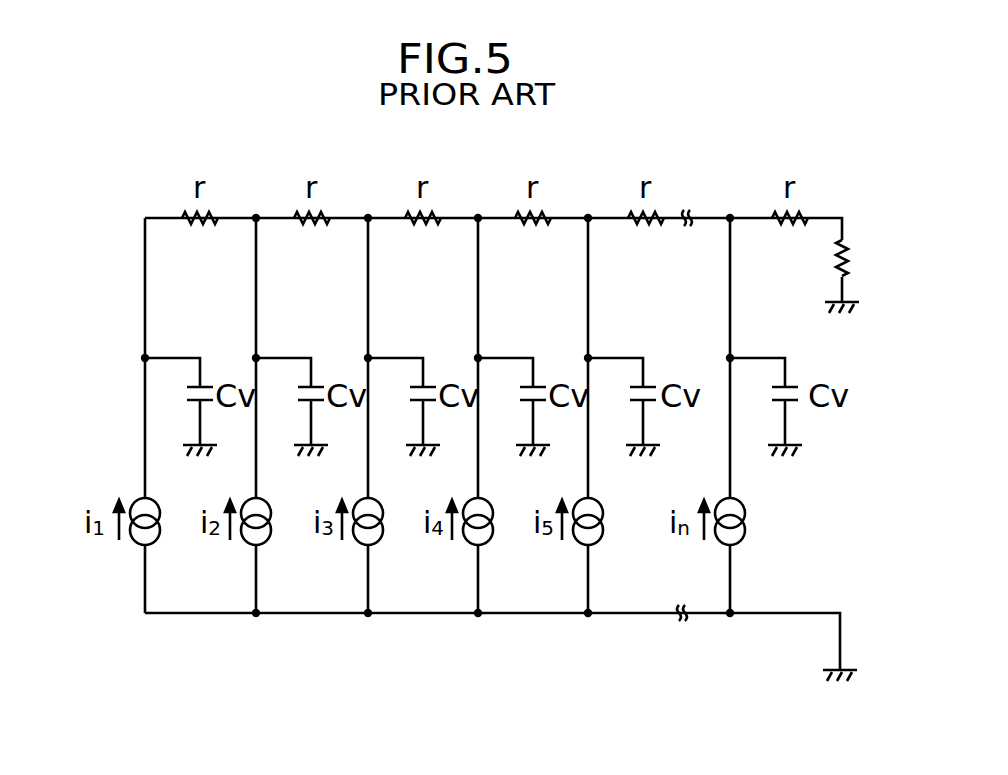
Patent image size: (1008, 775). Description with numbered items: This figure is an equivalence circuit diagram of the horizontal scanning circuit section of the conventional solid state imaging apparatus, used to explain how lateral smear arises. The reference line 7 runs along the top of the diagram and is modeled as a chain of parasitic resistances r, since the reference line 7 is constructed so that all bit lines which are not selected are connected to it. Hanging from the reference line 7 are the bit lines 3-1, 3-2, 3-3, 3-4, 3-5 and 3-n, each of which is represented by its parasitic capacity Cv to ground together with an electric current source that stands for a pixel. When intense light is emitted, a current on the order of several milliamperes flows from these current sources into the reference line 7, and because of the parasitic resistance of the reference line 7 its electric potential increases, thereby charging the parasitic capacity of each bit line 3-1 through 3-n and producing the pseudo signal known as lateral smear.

The first delay line stage node 3-1 is at (145, 290).
The second delay line stage node 3-2 is at (256, 290).
The third delay line stage node 3-3 is at (368, 290).
The fourth delay line stage node 3-4 is at (478, 290).
The fifth delay line stage node 3-5 is at (588, 290).
The n-th delay line stage node 3-n is at (730, 290).
The reference line 7 is at (731, 216).